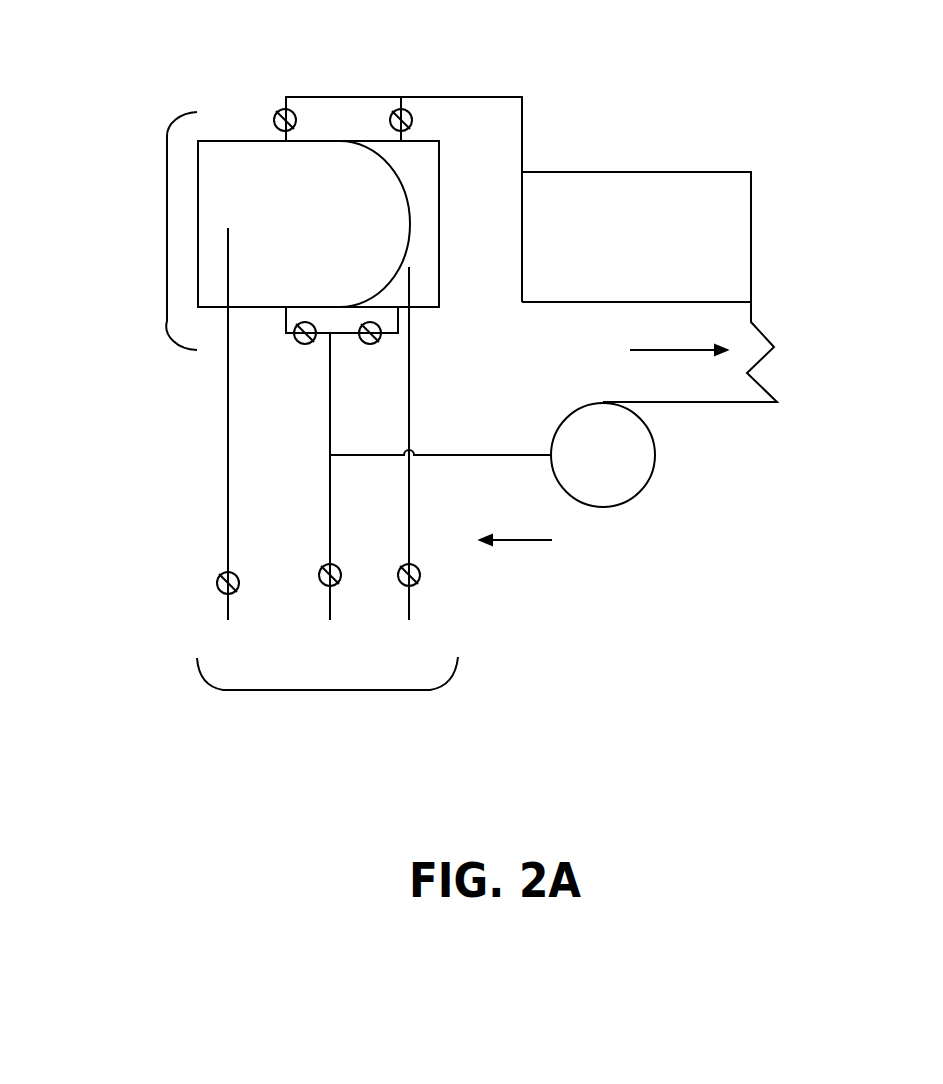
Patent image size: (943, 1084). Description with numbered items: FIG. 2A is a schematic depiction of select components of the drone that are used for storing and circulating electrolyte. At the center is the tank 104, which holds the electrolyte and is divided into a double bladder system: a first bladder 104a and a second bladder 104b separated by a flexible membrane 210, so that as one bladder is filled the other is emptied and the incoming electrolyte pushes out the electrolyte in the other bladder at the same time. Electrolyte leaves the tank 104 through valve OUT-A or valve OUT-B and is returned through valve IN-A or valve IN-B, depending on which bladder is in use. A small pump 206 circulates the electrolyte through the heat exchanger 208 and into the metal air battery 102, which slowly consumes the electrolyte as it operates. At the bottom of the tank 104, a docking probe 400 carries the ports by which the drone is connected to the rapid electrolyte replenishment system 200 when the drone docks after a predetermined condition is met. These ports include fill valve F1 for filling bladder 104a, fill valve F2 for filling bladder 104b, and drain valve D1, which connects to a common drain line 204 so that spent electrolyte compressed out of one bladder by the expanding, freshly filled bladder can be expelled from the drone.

The metal air battery 102 is at (636, 237).
The tank 104 is at (167, 232).
The bladder 104a is at (252, 158).
The bladder 104b is at (415, 158).
The rapid electrolyte replenishment system 200 is at (545, 540).
The common drain line 204 is at (330, 512).
The pump 206 is at (642, 490).
The heat exchanger 208 is at (653, 350).
The flexible membrane 210 is at (409, 229).
The docking probe 400 is at (328, 690).
The valve IN-A is at (278, 110).
The valve IN-B is at (392, 110).
The valve OUT-A is at (298, 343).
The valve OUT-B is at (381, 340).
The fill valve F1 is at (217, 585).
The fill valve F2 is at (420, 575).
The drain valve D1 is at (322, 568).